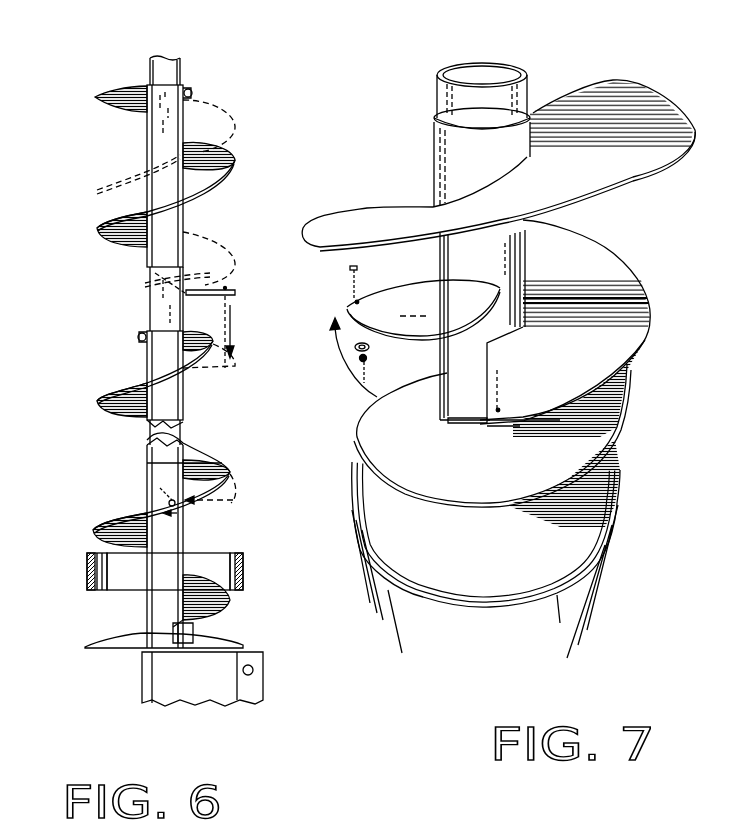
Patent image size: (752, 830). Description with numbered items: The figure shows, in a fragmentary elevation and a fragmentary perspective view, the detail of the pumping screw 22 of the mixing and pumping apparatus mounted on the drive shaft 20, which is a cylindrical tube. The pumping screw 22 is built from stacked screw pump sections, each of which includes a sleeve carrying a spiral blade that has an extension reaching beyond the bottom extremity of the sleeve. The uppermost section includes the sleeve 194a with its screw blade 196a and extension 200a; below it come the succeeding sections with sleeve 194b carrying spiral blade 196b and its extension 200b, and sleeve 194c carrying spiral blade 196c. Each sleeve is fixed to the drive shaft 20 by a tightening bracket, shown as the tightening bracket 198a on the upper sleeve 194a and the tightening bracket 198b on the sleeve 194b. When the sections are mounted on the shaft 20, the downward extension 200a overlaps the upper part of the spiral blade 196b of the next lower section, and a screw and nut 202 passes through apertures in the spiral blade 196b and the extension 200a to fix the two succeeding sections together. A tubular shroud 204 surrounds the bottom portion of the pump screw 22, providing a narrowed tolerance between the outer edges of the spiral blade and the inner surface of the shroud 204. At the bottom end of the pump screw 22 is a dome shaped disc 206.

In FIG. 6, the drive shaft 20 is at (183, 68).
In FIG. 7, the drive shaft 20 is at (440, 100).
In FIG. 6, the pumping screw 22 is at (125, 268).
In FIG. 7, the pumping screw 22 is at (582, 73).
In FIG. 6, the sleeve 194a is at (155, 142).
In FIG. 7, the sleeve 194a is at (443, 150).
In FIG. 6, the sleeve 194b is at (185, 395).
In FIG. 7, the sleeve 194b is at (457, 355).
In FIG. 6, the sleeve 194c is at (147, 617).
In FIG. 6, the spiral blade 196a is at (215, 158).
In FIG. 7, the spiral blade 196a is at (625, 183).
In FIG. 6, the spiral blade 196b is at (217, 338).
In FIG. 7, the spiral blade 196b is at (347, 309).
In FIG. 6, the spiral blade 196c is at (100, 520).
In FIG. 6, the tightening bracket 198a is at (195, 93).
In FIG. 6, the tightening bracket 198b is at (137, 337).
In FIG. 6, the extension 200a is at (225, 288).
In FIG. 7, the extension 200a is at (612, 348).
In FIG. 6, the extension 200b is at (212, 467).
In FIG. 6, the screw and nut 202 is at (168, 501).
In FIG. 7, the screw and nut 202 is at (357, 272).
In FIG. 6, the tubular shroud 204 is at (215, 553).
In FIG. 7, the tubular shroud 204 is at (617, 507).
In FIG. 6, the dome shaped disc 206 is at (120, 650).